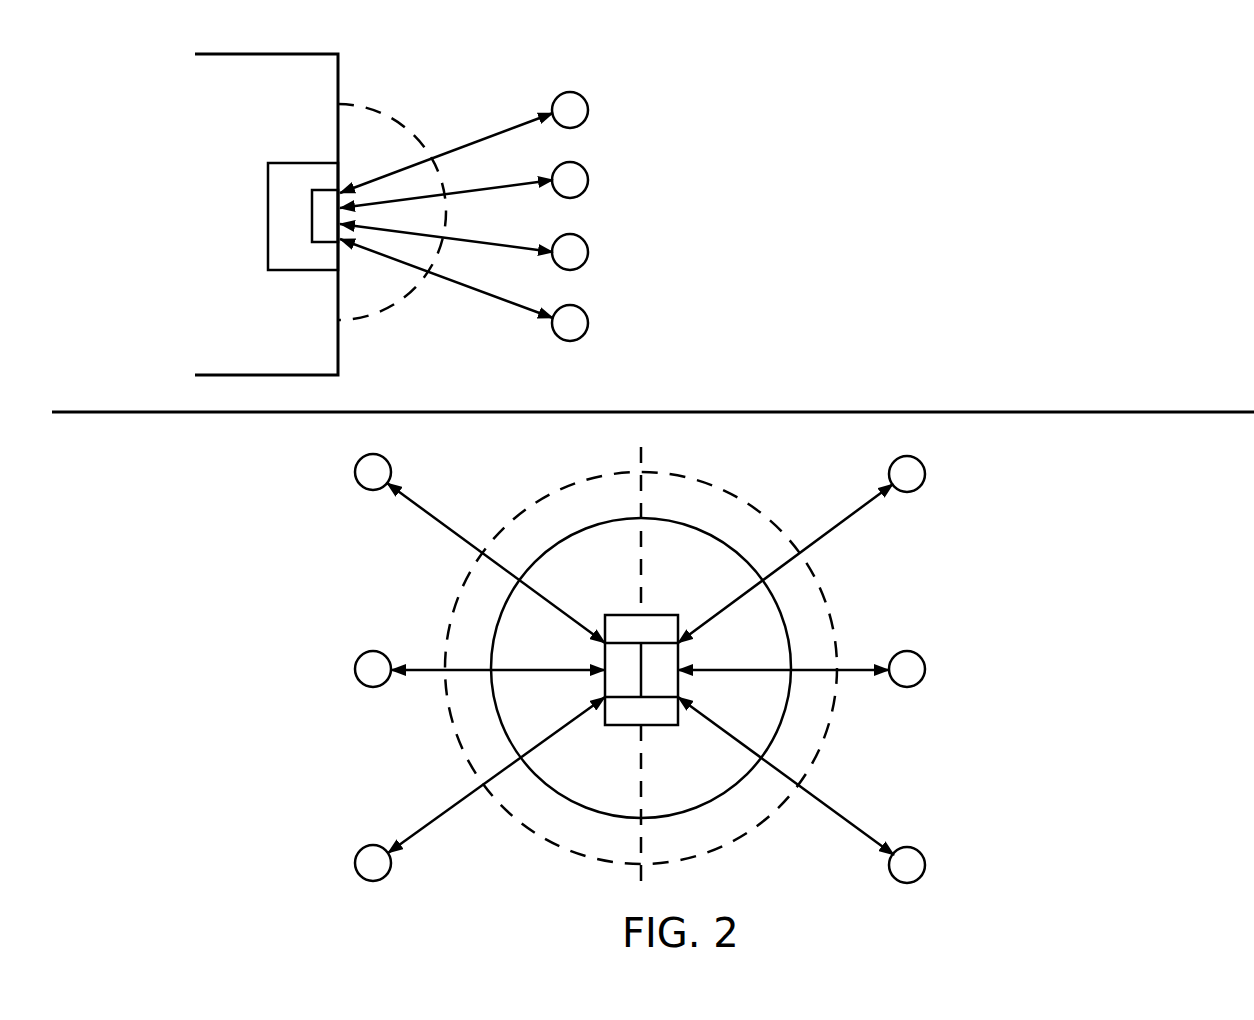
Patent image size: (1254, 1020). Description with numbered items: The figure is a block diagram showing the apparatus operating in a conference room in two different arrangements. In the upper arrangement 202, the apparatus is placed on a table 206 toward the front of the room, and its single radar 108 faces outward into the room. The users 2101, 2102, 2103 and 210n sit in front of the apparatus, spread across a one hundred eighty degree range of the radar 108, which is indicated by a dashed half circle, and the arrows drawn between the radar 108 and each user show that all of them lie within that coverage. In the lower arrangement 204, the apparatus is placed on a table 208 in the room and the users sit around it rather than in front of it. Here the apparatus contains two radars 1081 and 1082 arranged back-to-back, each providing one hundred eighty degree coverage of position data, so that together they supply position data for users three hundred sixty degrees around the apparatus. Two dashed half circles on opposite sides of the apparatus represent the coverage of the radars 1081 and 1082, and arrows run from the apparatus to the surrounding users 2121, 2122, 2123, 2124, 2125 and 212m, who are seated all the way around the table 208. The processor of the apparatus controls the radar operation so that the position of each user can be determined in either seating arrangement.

The arrangement 202 is at (92, 56).
The arrangement 204 is at (110, 492).
The table 206 is at (332, 62).
The radar 108 is at (322, 243).
The radar 1081 is at (612, 683).
The radar 1082 is at (670, 683).
The table 208 is at (783, 613).
The user 2101 is at (588, 108).
The user 2102 is at (588, 178).
The user 2103 is at (588, 250).
The user 210n is at (588, 320).
The user 2121 is at (925, 480).
The user 2122 is at (925, 667).
The user 2123 is at (925, 863).
The user 2124 is at (355, 861).
The user 2125 is at (355, 667).
The user 212m is at (355, 478).